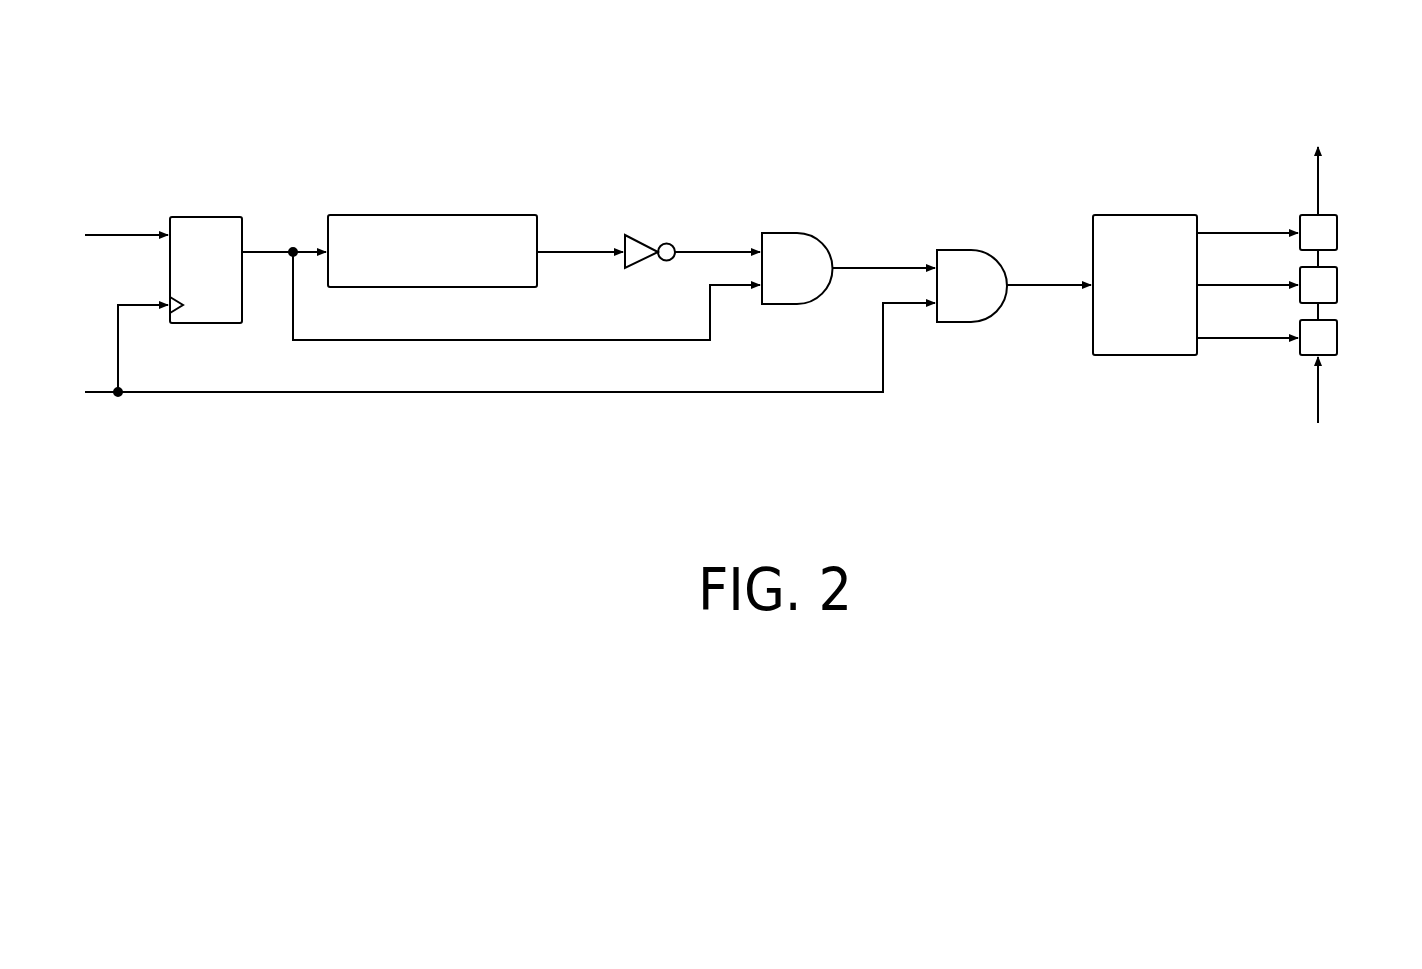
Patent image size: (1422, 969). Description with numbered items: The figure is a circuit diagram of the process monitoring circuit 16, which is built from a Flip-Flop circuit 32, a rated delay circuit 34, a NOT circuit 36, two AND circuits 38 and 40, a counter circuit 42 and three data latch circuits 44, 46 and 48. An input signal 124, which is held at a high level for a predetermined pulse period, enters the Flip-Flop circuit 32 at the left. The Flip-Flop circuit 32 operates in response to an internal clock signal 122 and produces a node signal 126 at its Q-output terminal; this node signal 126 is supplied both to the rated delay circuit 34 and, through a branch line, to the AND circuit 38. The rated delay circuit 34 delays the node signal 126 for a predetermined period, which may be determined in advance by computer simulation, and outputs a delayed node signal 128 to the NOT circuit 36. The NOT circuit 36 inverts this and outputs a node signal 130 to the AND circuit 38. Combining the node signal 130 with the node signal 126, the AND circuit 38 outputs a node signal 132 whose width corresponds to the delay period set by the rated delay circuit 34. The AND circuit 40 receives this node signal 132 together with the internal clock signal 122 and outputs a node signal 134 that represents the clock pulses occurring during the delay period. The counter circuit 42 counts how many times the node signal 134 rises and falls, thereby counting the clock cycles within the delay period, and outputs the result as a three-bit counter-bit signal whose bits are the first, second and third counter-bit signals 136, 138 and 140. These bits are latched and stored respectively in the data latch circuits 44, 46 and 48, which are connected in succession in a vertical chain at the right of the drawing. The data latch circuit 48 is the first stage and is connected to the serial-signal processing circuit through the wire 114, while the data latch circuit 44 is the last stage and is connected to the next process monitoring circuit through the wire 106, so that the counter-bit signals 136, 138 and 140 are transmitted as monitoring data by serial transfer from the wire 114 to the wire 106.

The process monitoring circuit 16 is at (973, 92).
The Flip-Flop circuit 32 is at (207, 211).
The rated delay circuit 34 is at (505, 213).
The NOT circuit 36 is at (648, 238).
The AND circuit 38 is at (800, 231).
The AND circuit 40 is at (975, 248).
The counter circuit 42 is at (1148, 213).
The data latch circuit 44 is at (1337, 226).
The data latch circuit 46 is at (1337, 278).
The data latch circuit 48 is at (1337, 330).
The wire 106 is at (1318, 180).
The wire 114 is at (1318, 390).
The internal clock signal 122 is at (85, 393).
The input signal 124 is at (85, 235).
The node signal 126 is at (262, 250).
The delayed node signal 128 is at (572, 250).
The node signal 130 is at (717, 250).
The node signal 132 is at (888, 265).
The node signal 134 is at (1040, 283).
The first counter-bit signal 136 is at (1216, 231).
The second counter-bit signal 138 is at (1216, 283).
The third counter-bit signal 140 is at (1214, 341).